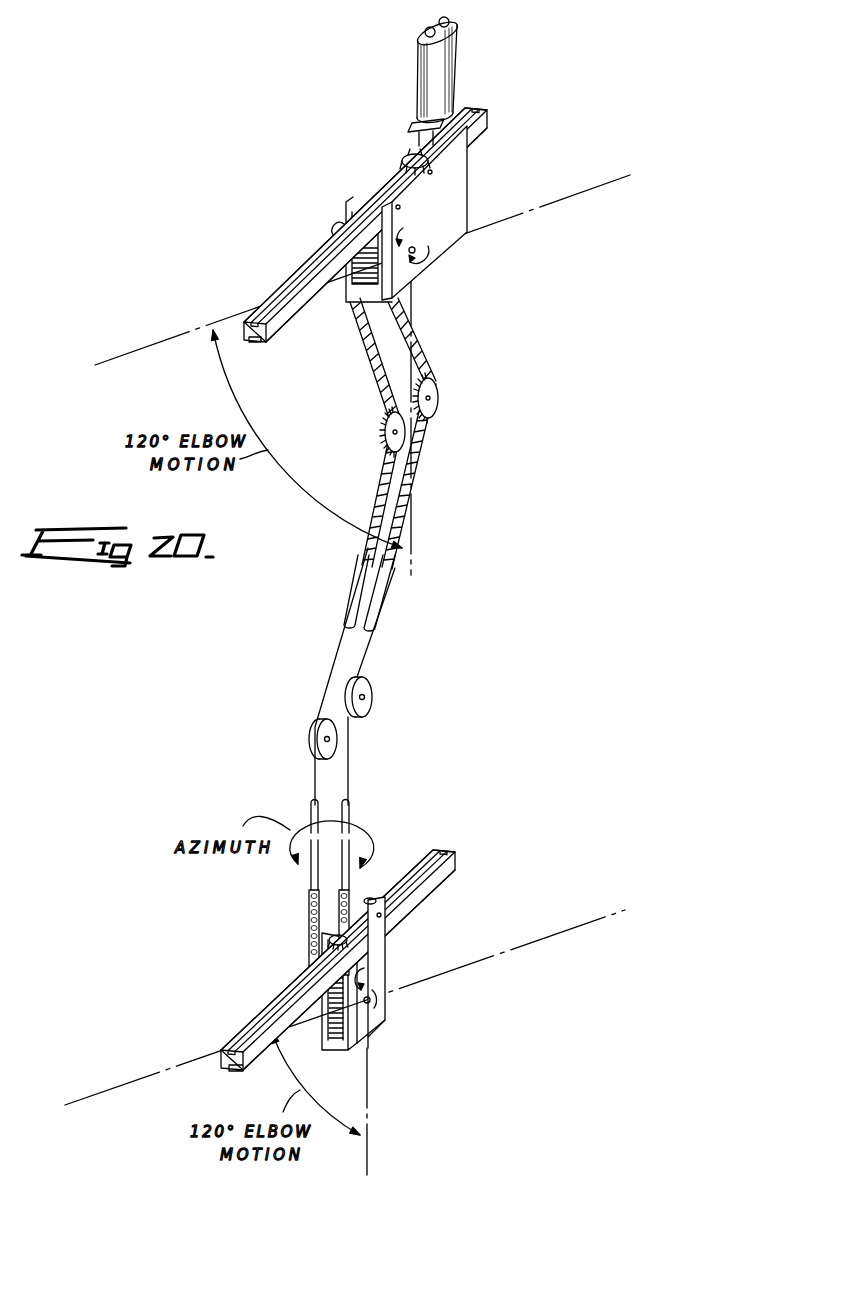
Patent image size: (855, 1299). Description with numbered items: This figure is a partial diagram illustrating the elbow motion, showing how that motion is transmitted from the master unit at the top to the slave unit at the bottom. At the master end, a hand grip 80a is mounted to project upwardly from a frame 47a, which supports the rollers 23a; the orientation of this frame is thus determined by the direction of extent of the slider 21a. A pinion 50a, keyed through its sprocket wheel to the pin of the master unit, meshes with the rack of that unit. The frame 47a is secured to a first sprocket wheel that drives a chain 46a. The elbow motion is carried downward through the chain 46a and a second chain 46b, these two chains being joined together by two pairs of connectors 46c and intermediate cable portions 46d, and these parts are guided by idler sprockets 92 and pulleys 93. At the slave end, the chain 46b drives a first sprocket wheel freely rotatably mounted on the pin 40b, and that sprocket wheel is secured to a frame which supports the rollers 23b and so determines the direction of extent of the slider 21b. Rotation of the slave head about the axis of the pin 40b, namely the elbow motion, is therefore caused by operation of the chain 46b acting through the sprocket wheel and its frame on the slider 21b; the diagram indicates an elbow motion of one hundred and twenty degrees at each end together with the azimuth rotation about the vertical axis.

The hand grip 80a is at (440, 58).
The rollers 23a is at (410, 165).
The frame 47a is at (450, 198).
The pinion 50a is at (376, 252).
The slider 21a is at (296, 278).
The chain 46a is at (420, 343).
The idler sprockets 92 is at (432, 389).
The connectors 46c is at (360, 606).
The pulleys 93 is at (337, 743).
The intermediate cable portions 46d is at (347, 773).
The chain 46b is at (307, 908).
The rollers 23b is at (373, 900).
The slider 21b is at (421, 897).
The pin 40b is at (358, 1020).